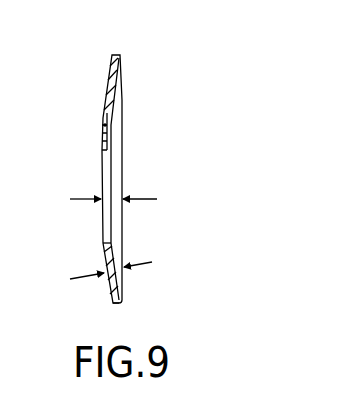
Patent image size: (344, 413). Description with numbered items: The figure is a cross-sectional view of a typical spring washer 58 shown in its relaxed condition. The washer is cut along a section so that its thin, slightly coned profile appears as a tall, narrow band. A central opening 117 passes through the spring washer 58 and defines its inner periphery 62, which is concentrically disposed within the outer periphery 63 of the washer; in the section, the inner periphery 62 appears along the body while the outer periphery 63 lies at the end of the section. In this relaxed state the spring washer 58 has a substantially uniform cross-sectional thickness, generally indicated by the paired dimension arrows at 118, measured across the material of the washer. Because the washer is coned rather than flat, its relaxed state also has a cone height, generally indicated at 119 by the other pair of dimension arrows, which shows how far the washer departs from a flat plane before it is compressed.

The spring washer 58 is at (101, 79).
The central opening 117 is at (103, 127).
The cone height 119 is at (118, 195).
The inner periphery 62 is at (105, 243).
The cross-sectional thickness 118 is at (120, 280).
The outer periphery 63 is at (113, 307).